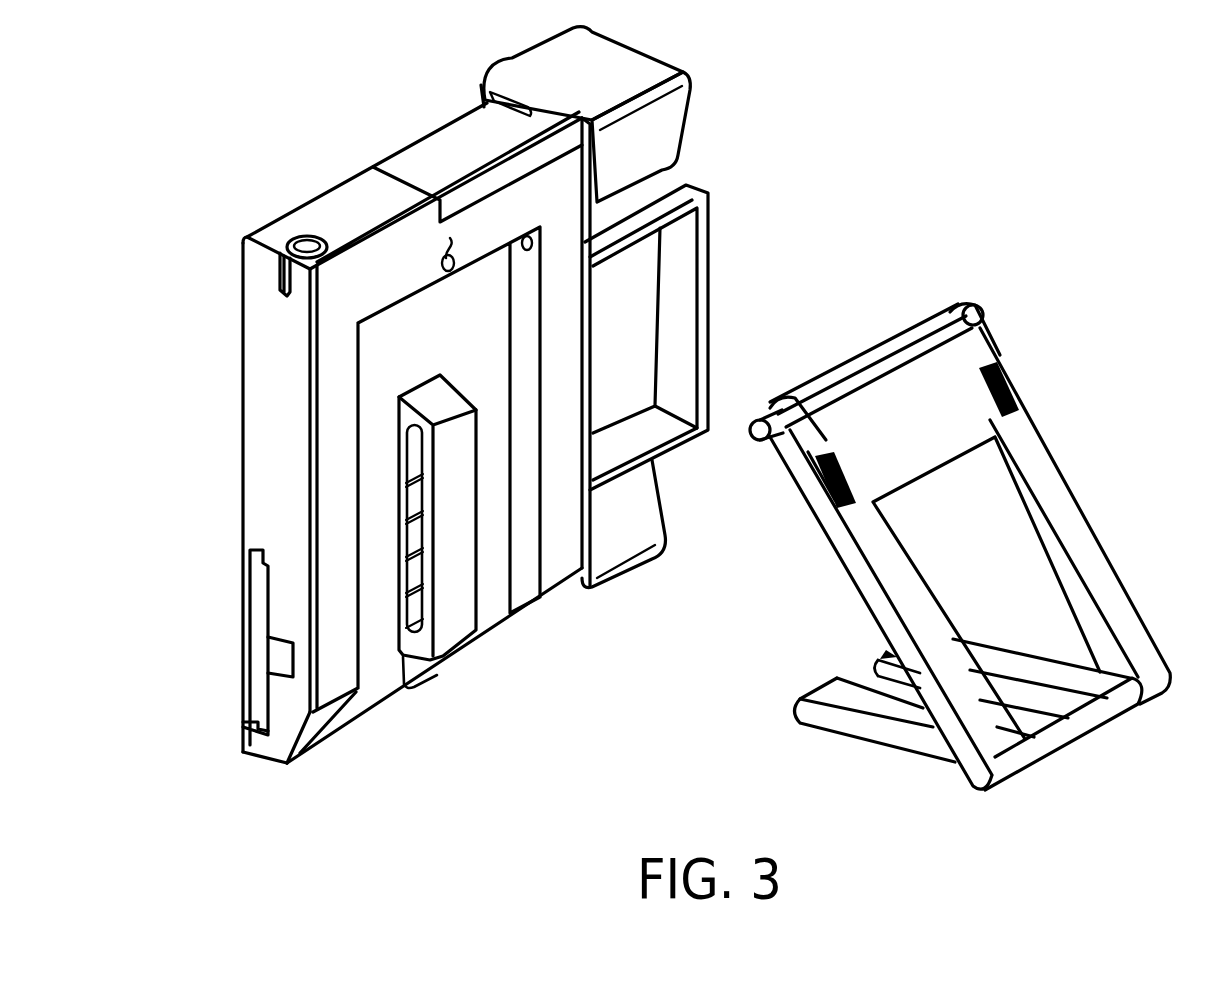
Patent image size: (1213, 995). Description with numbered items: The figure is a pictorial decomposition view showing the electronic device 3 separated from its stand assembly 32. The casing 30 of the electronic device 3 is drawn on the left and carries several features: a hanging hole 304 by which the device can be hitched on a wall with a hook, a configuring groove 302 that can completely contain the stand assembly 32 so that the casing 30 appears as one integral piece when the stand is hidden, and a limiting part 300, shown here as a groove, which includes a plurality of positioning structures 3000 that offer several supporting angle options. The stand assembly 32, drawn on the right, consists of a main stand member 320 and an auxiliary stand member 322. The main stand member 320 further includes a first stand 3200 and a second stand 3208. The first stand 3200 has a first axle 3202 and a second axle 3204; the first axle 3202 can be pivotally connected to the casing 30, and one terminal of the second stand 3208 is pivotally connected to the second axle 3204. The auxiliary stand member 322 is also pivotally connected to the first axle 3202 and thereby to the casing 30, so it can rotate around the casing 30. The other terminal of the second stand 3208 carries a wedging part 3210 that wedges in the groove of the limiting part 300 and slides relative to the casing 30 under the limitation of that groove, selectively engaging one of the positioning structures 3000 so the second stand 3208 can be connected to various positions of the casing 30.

The electronic device 3 is at (942, 100).
The casing 30 is at (340, 215).
The hanging hole 304 is at (440, 248).
The configuring groove 302 is at (497, 557).
The limiting part 300 is at (458, 590).
The positioning structures 3000 is at (403, 593).
The stand assembly 32 is at (912, 262).
The auxiliary stand member 322 is at (822, 420).
The main stand member 320 is at (884, 335).
The first axle 3202 is at (982, 306).
The first stand 3200 is at (1042, 480).
The second axle 3204 is at (1067, 727).
The second stand 3208 is at (808, 718).
The wedging part 3210 is at (872, 673).